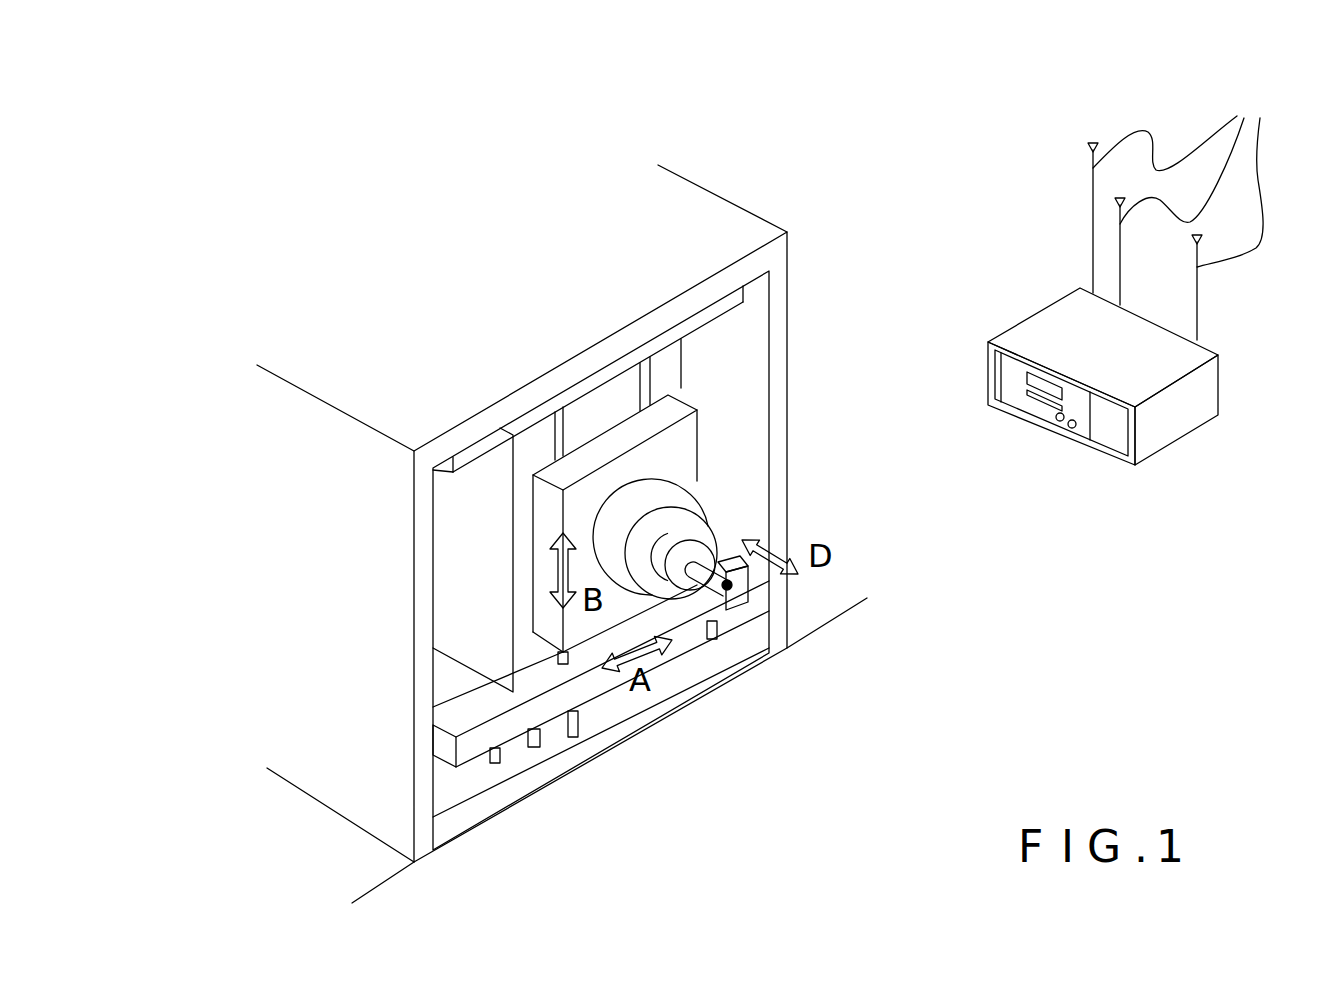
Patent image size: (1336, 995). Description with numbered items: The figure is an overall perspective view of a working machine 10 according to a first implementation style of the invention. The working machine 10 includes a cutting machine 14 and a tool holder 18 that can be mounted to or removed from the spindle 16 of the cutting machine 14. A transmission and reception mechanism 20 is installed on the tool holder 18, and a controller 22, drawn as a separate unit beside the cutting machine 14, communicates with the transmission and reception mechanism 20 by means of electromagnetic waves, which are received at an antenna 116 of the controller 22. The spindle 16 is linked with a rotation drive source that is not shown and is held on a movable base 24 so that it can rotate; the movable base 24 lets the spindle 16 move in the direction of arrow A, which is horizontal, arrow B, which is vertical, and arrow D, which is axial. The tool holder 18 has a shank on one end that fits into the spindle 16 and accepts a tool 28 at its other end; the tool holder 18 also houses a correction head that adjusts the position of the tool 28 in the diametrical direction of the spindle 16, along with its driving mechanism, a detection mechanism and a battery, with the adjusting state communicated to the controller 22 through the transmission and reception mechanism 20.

The working machine 10 is at (766, 112).
The cutting machine 14 is at (370, 742).
The spindle 16 is at (531, 482).
The tool holder 18 is at (707, 537).
The transmission and reception mechanism 20 is at (680, 525).
The controller 22 is at (1196, 458).
The movable base 24 is at (543, 535).
The tool 28 is at (728, 590).
The antenna 116 is at (1193, 209).